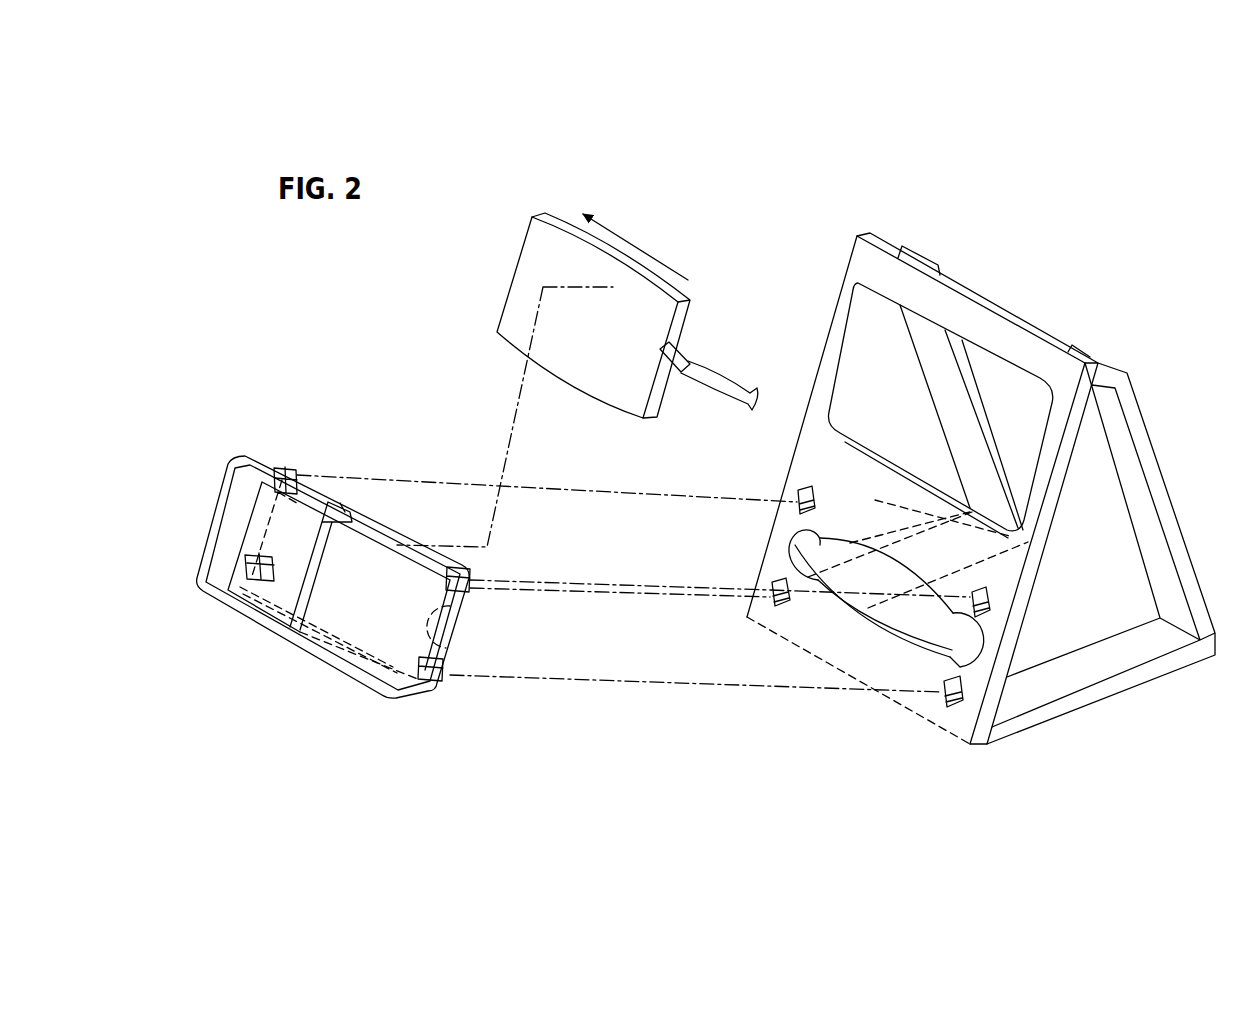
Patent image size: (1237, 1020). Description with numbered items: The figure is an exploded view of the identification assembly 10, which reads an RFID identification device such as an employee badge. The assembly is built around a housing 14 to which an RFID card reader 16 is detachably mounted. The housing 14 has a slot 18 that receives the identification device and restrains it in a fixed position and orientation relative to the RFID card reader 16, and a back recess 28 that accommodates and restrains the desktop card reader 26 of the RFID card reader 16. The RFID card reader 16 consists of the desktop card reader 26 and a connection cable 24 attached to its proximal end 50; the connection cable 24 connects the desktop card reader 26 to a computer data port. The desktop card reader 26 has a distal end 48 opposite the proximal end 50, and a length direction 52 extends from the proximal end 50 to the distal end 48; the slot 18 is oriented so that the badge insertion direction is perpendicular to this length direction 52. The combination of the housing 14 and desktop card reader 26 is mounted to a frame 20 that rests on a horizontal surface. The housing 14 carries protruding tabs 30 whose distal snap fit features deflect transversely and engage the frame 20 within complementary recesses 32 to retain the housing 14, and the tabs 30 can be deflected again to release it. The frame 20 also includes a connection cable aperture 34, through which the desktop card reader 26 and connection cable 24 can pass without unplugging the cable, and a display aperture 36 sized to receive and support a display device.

The identification assembly 10 is at (930, 93).
The housing 14 is at (383, 625).
The RFID card reader 16 is at (730, 238).
The slot 18 is at (305, 456).
The frame 20 is at (882, 516).
The connection cable 24 is at (707, 401).
The desktop card reader 26 is at (604, 341).
The back recess 28 is at (450, 535).
The protruding tabs 30 is at (318, 468).
The recesses 32 is at (788, 496).
The connection cable aperture 34 is at (900, 617).
The display aperture 36 is at (873, 376).
The distal end 48 is at (508, 271).
The proximal end 50 is at (686, 343).
The length direction 52 is at (635, 247).